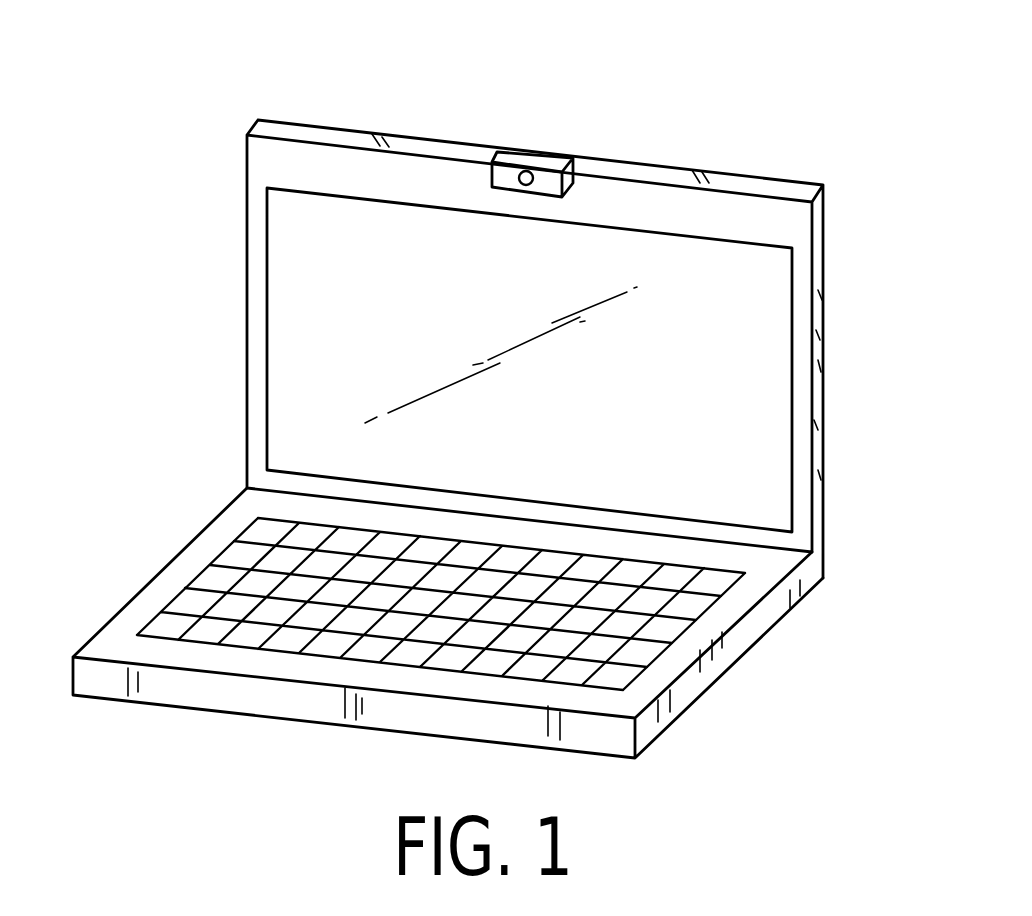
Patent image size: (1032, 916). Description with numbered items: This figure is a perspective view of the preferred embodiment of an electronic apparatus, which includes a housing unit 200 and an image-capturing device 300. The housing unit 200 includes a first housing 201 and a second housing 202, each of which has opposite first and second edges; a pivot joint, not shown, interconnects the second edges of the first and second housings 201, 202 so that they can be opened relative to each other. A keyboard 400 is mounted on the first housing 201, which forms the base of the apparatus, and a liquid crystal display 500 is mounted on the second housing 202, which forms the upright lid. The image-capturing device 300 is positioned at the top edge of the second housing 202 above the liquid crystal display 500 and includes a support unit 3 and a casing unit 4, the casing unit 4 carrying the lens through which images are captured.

The housing unit 200 is at (487, 388).
The first housing 201 is at (203, 557).
The second housing 202 is at (297, 176).
The image-capturing device 300 is at (553, 108).
The support unit 3 is at (495, 158).
The casing unit 4 is at (550, 182).
The keyboard 400 is at (660, 628).
The liquid crystal display 500 is at (738, 383).